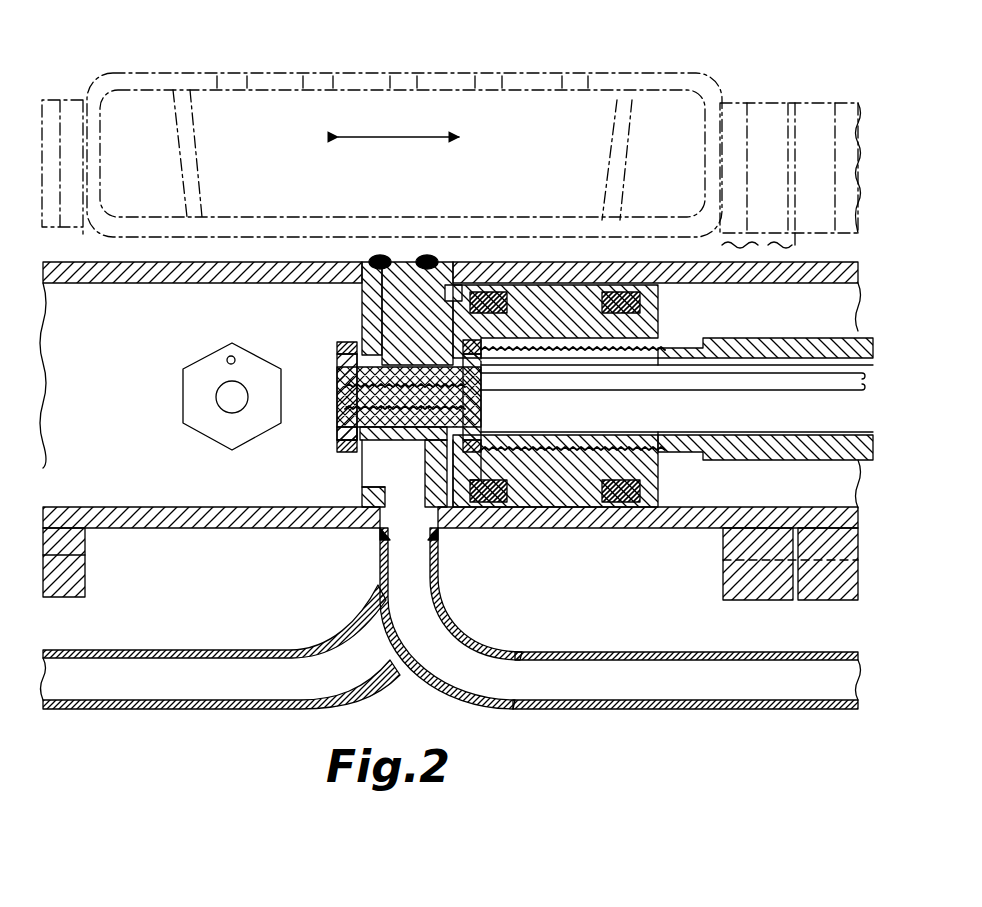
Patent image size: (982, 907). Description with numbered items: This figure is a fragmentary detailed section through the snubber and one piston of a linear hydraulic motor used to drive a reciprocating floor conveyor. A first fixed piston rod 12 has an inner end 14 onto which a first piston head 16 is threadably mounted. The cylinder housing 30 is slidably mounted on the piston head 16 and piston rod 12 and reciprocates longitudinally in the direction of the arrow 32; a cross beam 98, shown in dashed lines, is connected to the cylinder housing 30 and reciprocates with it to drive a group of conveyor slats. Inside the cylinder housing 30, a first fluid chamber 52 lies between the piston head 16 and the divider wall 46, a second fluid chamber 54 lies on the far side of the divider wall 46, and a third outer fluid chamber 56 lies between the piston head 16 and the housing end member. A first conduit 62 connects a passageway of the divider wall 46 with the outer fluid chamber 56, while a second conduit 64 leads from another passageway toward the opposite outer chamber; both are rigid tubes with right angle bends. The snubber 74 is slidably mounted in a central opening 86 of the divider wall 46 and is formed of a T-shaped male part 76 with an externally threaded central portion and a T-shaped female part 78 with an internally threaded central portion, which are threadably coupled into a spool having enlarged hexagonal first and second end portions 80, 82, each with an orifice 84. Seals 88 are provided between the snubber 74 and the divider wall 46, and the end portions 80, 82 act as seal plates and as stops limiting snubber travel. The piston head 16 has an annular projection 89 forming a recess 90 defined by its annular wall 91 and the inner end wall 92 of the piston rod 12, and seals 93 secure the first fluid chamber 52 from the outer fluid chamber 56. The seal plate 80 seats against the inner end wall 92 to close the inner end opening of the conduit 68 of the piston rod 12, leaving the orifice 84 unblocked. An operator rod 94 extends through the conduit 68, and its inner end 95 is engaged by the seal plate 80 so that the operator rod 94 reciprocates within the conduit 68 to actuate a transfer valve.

The first fixed piston rod 12 is at (745, 350).
The inner end 14 is at (548, 288).
The first piston head 16 is at (575, 507).
The cylinder housing 30 is at (205, 262).
The arrow 32 is at (378, 130).
The divider wall 46 is at (398, 275).
The first fluid chamber 52 is at (410, 300).
The second fluid chamber 54 is at (178, 470).
The third outer fluid chamber 56 is at (712, 487).
The first conduit 62 is at (612, 710).
The second conduit 64 is at (210, 710).
The conduit 68 is at (775, 360).
The snubber 74 is at (337, 432).
The T-shaped male part 76 is at (338, 400).
The T-shaped female part 78 is at (318, 455).
The first end portion 80 is at (481, 410).
The second end portion 82 is at (337, 372).
The orifice 84 is at (228, 358).
The central opening 86 is at (380, 256).
The seals 88 is at (352, 458).
The annular projection 89 is at (455, 290).
The recess 90 is at (456, 460).
The annular wall 91 is at (480, 490).
The inner end wall 92 is at (520, 348).
The seals 93 is at (490, 290).
The operator rod 94 is at (667, 380).
The inner end 95 is at (487, 395).
The cross beam 98 is at (468, 73).